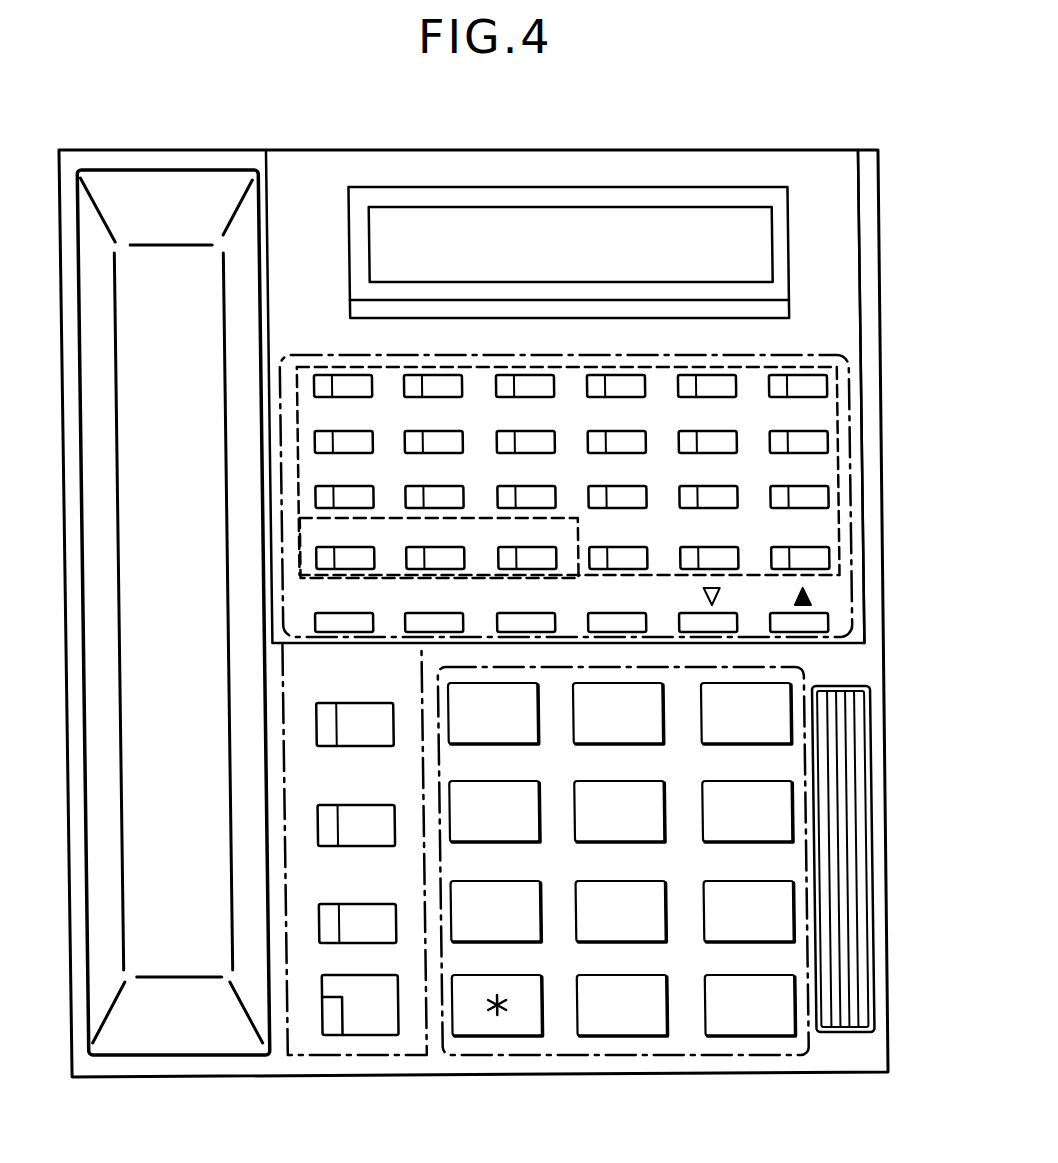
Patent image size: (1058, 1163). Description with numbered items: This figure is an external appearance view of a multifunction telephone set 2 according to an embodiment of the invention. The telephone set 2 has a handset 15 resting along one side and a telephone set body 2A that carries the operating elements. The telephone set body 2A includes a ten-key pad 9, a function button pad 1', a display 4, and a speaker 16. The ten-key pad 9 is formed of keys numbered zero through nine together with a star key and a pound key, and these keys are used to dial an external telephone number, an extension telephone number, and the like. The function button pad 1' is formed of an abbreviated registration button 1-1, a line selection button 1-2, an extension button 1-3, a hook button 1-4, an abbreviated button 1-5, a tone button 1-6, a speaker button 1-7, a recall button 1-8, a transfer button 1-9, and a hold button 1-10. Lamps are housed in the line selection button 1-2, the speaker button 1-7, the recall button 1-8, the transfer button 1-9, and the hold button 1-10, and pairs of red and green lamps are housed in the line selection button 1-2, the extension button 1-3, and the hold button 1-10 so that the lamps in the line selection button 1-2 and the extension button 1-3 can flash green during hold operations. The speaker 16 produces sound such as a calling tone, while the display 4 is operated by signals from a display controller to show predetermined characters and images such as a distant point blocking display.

The multifunction telephone set 2 is at (648, 150).
The telephone set body 2A is at (833, 265).
The display 4 is at (740, 230).
The handset 15 is at (184, 302).
The function button pad 1' is at (606, 496).
The abbreviated registration button 1-1 is at (832, 412).
The line selection button 1-2 is at (293, 557).
The extension button 1-3 is at (307, 622).
The hook button 1-4 is at (397, 624).
The abbreviated button 1-5 is at (535, 633).
The tone button 1-6 is at (637, 625).
The speaker button 1-7 is at (307, 719).
The recall button 1-8 is at (307, 818).
The transfer button 1-9 is at (307, 919).
The hold button 1-10 is at (338, 1035).
The ten-key pad 9 is at (626, 1053).
The speaker 16 is at (842, 900).